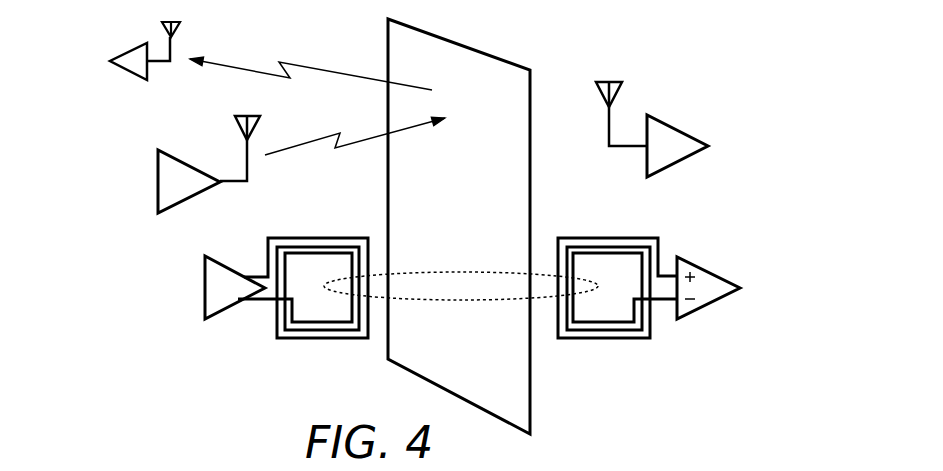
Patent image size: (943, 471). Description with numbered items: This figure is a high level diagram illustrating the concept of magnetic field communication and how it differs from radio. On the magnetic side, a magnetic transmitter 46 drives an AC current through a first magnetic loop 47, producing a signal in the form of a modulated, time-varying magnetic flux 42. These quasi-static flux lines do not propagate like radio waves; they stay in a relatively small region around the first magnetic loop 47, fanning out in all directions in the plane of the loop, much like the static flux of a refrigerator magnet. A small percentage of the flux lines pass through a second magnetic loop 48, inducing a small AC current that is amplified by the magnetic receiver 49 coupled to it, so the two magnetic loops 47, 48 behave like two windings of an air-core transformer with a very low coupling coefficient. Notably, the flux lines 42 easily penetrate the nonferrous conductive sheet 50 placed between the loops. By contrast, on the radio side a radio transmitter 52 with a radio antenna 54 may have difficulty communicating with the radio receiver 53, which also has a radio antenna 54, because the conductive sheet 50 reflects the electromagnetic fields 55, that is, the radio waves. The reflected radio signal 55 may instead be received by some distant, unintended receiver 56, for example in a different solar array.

The modulated magnetic flux 42 is at (418, 302).
The magnetic transmitter 46 is at (227, 309).
The first magnetic loop 47 is at (310, 237).
The second magnetic loop 48 is at (605, 338).
The magnetic receiver 49 is at (710, 268).
The conductive sheet 50 is at (531, 158).
The radio transmitter 52 is at (205, 171).
The radio receiver 53 is at (677, 125).
The radio antenna 54 is at (256, 129).
The electromagnetic fields (radio waves) 55 is at (343, 72).
The distant unintended receiver 56 is at (127, 72).